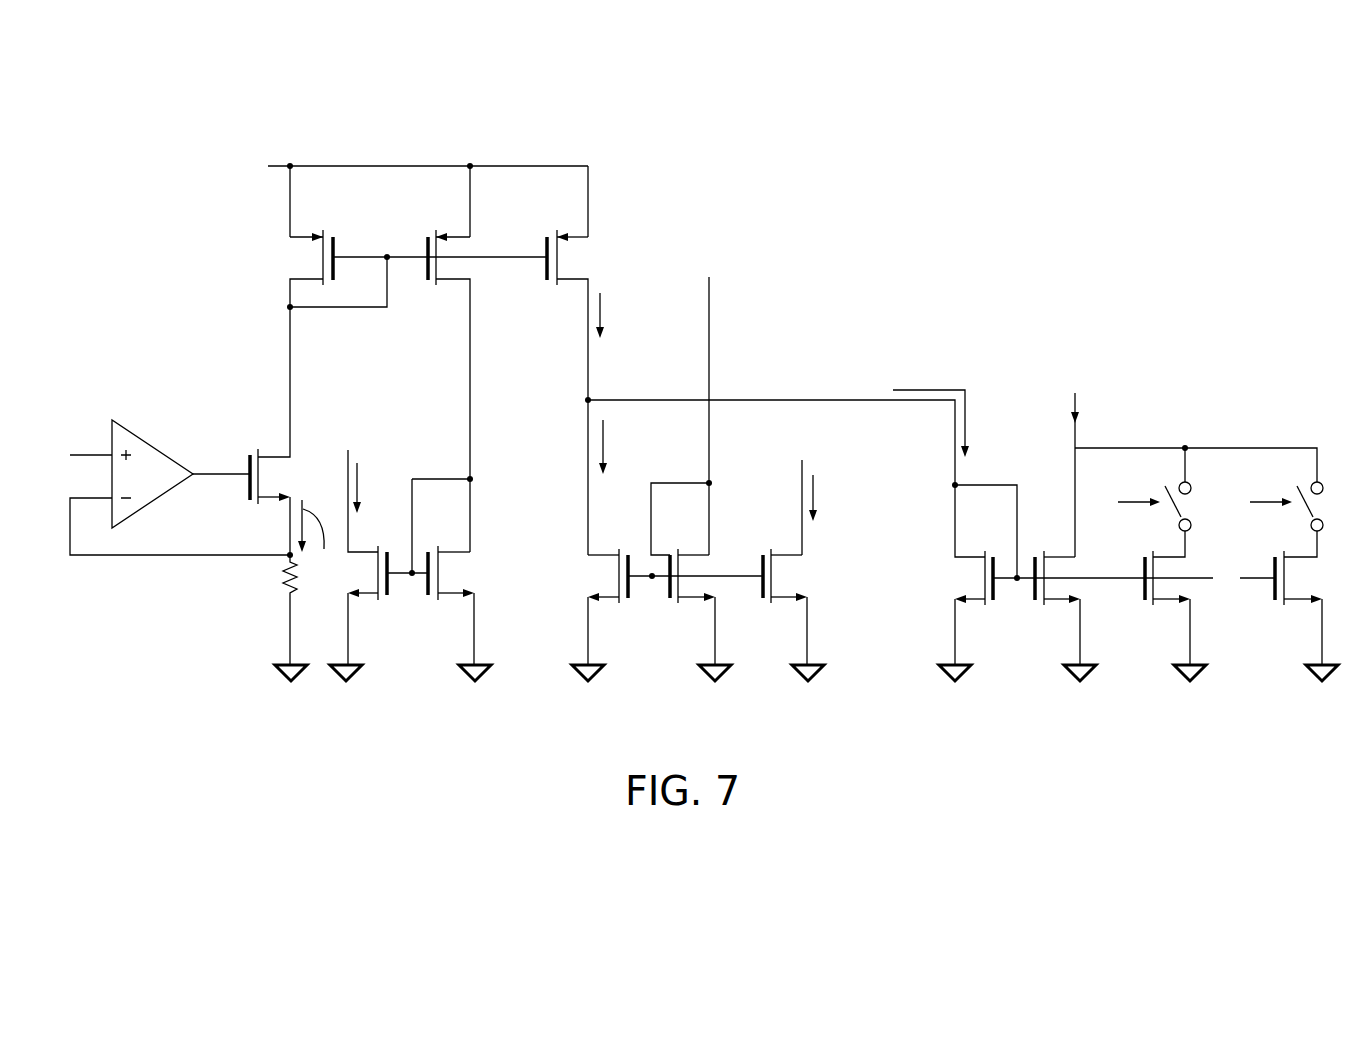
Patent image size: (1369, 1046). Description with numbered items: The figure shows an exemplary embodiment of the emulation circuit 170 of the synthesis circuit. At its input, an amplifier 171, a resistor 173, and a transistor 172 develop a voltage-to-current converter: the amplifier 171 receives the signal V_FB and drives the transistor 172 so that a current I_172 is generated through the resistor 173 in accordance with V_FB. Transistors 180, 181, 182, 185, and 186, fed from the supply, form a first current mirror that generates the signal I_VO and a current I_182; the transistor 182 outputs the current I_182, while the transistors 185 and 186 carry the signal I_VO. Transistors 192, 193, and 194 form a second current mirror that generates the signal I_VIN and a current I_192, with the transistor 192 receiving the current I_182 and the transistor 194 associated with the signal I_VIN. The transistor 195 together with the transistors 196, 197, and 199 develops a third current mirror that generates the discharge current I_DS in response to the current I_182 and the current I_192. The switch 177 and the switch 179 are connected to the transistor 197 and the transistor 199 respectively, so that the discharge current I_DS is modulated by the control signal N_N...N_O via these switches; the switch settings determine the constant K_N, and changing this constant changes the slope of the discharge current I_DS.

The emulation circuit 170 is at (694, 415).
The amplifier 171 is at (180, 484).
The transistor 172 is at (257, 431).
The resistor 173 is at (267, 610).
The switch 177 is at (1191, 519).
The switch 179 is at (1325, 519).
The transistor 180 is at (313, 270).
The transistor 181 is at (427, 390).
The transistor 182 is at (578, 257).
The transistor 185 is at (466, 570).
The transistor 186 is at (370, 557).
The transistor 192 is at (611, 607).
The transistor 193 is at (715, 607).
The transistor 194 is at (809, 607).
The transistor 195 is at (961, 573).
The transistor 196 is at (1051, 608).
The transistor 197 is at (1162, 608).
The transistor 199 is at (1295, 608).